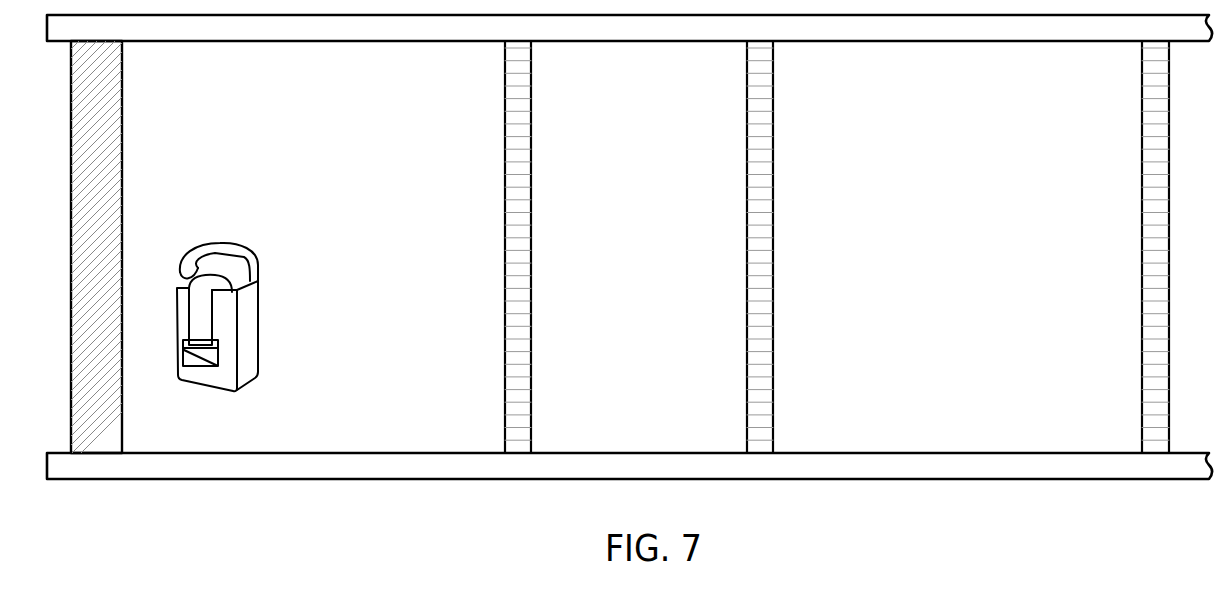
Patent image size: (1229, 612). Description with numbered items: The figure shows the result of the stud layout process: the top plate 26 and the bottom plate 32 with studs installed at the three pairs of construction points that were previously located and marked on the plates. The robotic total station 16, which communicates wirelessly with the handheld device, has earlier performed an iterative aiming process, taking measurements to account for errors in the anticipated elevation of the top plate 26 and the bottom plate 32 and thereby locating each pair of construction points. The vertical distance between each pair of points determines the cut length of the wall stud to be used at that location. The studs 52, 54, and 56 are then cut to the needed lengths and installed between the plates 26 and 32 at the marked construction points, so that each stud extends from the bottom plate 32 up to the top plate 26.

The robotic total station 16 is at (190, 382).
The top plate 26 is at (372, 33).
The bottom plate 32 is at (371, 461).
The stud 52 is at (522, 231).
The stud 54 is at (764, 231).
The stud 56 is at (1159, 231).